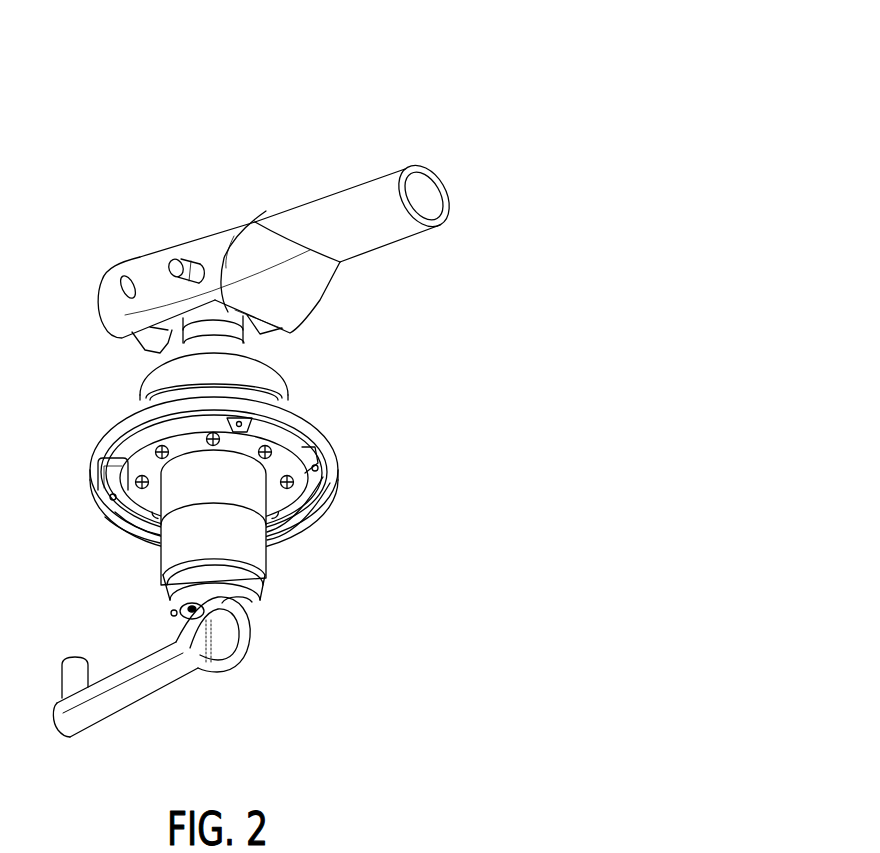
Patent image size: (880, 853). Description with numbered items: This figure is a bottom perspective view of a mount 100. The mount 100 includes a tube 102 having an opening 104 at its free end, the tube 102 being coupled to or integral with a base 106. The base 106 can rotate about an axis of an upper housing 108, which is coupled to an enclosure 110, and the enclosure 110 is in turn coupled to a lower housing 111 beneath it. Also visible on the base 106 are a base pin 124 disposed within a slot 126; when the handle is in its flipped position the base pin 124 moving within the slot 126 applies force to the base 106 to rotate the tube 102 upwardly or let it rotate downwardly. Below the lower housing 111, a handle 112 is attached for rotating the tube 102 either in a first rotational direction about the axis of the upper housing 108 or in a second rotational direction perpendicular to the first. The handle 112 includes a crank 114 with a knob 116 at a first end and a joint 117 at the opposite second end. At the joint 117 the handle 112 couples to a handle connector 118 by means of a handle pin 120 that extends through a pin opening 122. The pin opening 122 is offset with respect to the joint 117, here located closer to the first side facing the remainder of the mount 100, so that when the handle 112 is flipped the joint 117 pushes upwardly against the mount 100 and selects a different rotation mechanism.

The mount 100 is at (505, 77).
The tube 102 is at (421, 168).
The opening 104 is at (447, 200).
The base 106 is at (219, 228).
The upper housing 108 is at (234, 342).
The enclosure 110 is at (338, 455).
The lower housing 111 is at (272, 550).
The handle 112 is at (177, 702).
The crank 114 is at (113, 717).
The knob 116 is at (73, 658).
The joint 117 is at (243, 645).
The handle connector 118 is at (245, 603).
The handle pin 120 is at (190, 606).
The pin opening 122 is at (172, 617).
The base pin 124 is at (174, 261).
The slot 126 is at (266, 211).